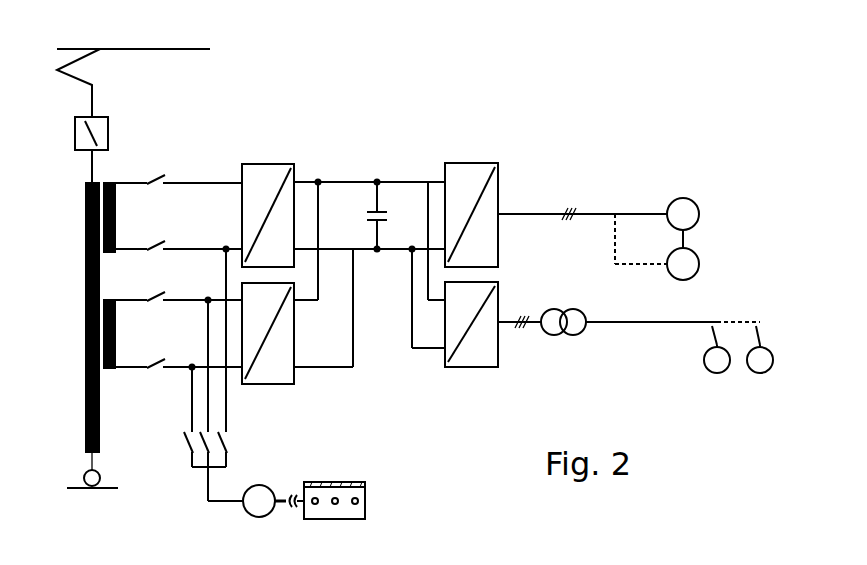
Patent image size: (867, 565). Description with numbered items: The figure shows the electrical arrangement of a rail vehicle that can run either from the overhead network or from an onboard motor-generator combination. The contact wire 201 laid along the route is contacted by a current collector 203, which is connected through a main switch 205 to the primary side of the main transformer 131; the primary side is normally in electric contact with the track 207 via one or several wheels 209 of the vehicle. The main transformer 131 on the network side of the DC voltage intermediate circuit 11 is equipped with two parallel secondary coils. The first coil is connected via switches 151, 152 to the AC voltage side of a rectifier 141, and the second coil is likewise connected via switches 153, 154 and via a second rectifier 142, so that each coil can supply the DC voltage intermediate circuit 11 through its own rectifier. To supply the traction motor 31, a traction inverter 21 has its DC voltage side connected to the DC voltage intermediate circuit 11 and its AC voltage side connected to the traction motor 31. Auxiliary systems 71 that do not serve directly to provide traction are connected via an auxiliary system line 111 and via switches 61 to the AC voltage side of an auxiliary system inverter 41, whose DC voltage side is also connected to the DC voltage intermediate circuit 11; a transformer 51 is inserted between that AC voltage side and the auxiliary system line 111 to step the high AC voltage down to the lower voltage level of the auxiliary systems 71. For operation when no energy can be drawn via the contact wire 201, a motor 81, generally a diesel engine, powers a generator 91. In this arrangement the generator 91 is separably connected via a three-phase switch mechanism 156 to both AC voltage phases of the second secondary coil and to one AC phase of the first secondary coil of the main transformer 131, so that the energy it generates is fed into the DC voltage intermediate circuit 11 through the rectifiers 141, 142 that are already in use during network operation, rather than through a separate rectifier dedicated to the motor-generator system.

The contact wire 201 is at (127, 48).
The current collector 203 is at (104, 72).
The main switch 205 is at (110, 131).
The main transformer 131 is at (83, 317).
The switch 151 is at (178, 172).
The switch 152 is at (178, 238).
The switch 153 is at (173, 289).
The switch 154 is at (173, 356).
The rectifier 141 is at (268, 206).
The second rectifier 142 is at (297, 344).
The DC voltage intermediate circuit 11 is at (369, 262).
The three-phase switch mechanism 156 is at (196, 375).
The generator 91 is at (259, 514).
The motor 81 is at (320, 513).
The traction inverter 21 is at (471, 205).
The traction motor 31 is at (598, 229).
The auxiliary system inverter 41 is at (471, 335).
The transformer 51 is at (542, 312).
The auxiliary system line 111 is at (673, 310).
The switches 61 is at (748, 349).
The auxiliary systems 71 is at (772, 349).
The wheels 209 is at (82, 477).
The track 207 is at (112, 490).